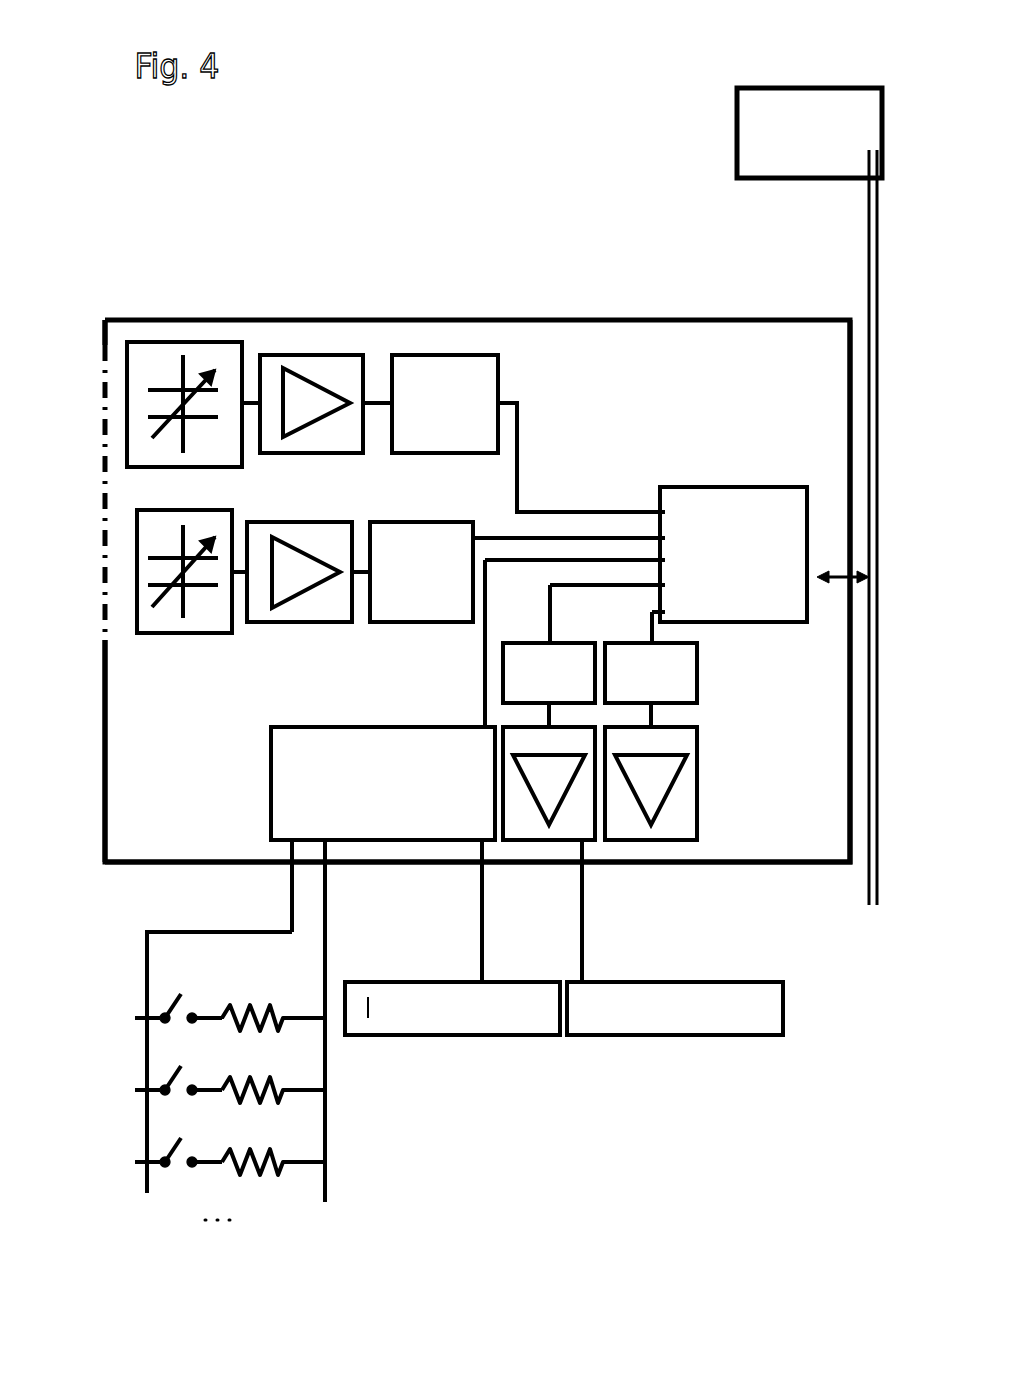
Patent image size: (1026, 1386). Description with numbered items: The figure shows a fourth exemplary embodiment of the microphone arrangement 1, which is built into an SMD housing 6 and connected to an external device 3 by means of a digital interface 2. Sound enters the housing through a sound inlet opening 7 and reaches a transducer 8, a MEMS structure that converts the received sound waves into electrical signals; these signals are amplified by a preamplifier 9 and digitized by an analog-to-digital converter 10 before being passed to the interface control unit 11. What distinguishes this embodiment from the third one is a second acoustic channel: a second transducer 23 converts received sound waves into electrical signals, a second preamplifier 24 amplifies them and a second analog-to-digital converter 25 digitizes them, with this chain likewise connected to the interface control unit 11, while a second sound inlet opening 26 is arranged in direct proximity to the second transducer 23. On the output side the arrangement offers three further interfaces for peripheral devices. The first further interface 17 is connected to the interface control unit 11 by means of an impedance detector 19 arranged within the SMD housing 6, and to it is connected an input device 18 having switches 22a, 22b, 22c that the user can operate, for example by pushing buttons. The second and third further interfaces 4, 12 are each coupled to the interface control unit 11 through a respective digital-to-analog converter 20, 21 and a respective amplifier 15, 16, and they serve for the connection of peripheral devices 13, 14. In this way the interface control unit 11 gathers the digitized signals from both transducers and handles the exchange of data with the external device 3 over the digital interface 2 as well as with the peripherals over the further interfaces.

The microphone arrangement 1 is at (588, 457).
The digital interface 2 is at (837, 570).
The external device 3 is at (737, 147).
The further interface 4 is at (587, 870).
The SMD housing 6 is at (822, 865).
The sound inlet opening 7 is at (104, 612).
The transducer 8 is at (190, 533).
The preamplifier 9 is at (320, 540).
The analog-to-digital converter 10 is at (420, 543).
The interface control unit 11 is at (727, 485).
The further interface 12 is at (477, 867).
The peripheral device 13 is at (480, 1027).
The peripheral device 14 is at (650, 1028).
The amplifier 15 is at (520, 757).
The amplifier 16 is at (683, 753).
The first further interface 17 is at (324, 865).
The input device 18 is at (135, 1026).
The impedance detector 19 is at (290, 787).
The digital-to-analog converter 20 is at (537, 643).
The digital-to-analog converter 21 is at (623, 660).
The switch 22a is at (173, 1000).
The switch 22b is at (173, 1073).
The switch 22c is at (180, 1160).
The second transducer 23 is at (140, 357).
The second preamplifier 24 is at (273, 370).
The second analog-to-digital converter 25 is at (407, 380).
The second sound inlet opening 26 is at (103, 404).